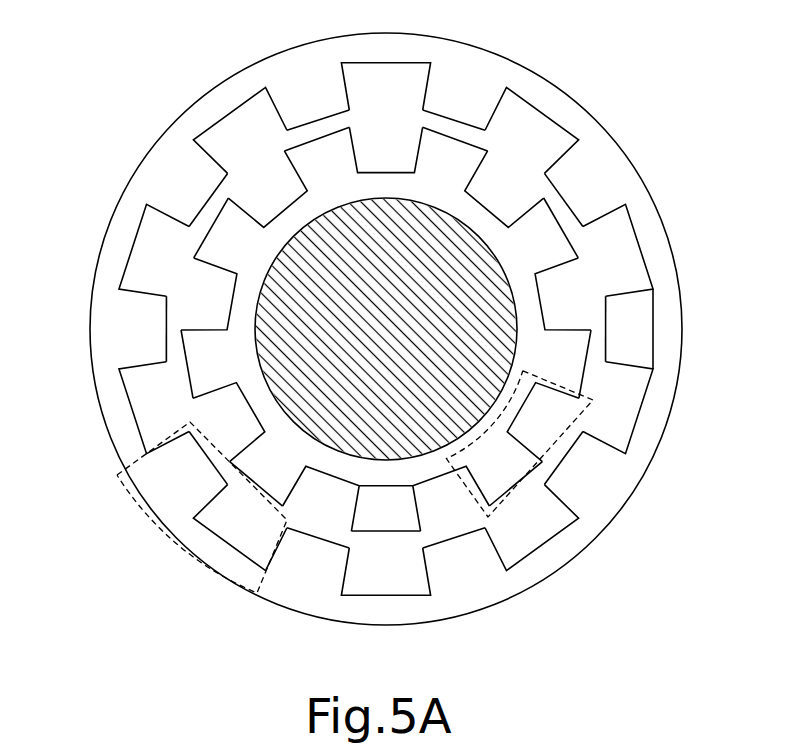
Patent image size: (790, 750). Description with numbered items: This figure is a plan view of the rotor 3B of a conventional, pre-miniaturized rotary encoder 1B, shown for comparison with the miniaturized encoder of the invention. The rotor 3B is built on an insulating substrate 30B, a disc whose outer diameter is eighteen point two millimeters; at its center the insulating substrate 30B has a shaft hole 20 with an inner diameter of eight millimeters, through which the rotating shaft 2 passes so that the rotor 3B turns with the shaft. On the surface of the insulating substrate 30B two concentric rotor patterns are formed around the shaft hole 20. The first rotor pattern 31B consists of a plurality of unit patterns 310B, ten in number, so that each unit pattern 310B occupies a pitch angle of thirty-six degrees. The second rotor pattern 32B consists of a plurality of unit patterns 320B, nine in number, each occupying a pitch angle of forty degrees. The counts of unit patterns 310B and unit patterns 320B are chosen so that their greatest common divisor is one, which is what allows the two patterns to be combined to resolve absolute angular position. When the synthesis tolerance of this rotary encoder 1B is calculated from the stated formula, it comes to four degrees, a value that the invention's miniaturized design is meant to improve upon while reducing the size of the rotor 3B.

The rotary encoder 1B is at (640, 89).
The rotating shaft 2 is at (257, 328).
The shaft hole 20 is at (270, 260).
The rotor 3B is at (98, 127).
The insulating substrate 30B is at (620, 138).
The first rotor pattern 31B is at (535, 100).
The second rotor pattern 32B is at (563, 230).
The unit patterns 310B is at (170, 553).
The unit patterns 320B is at (577, 453).